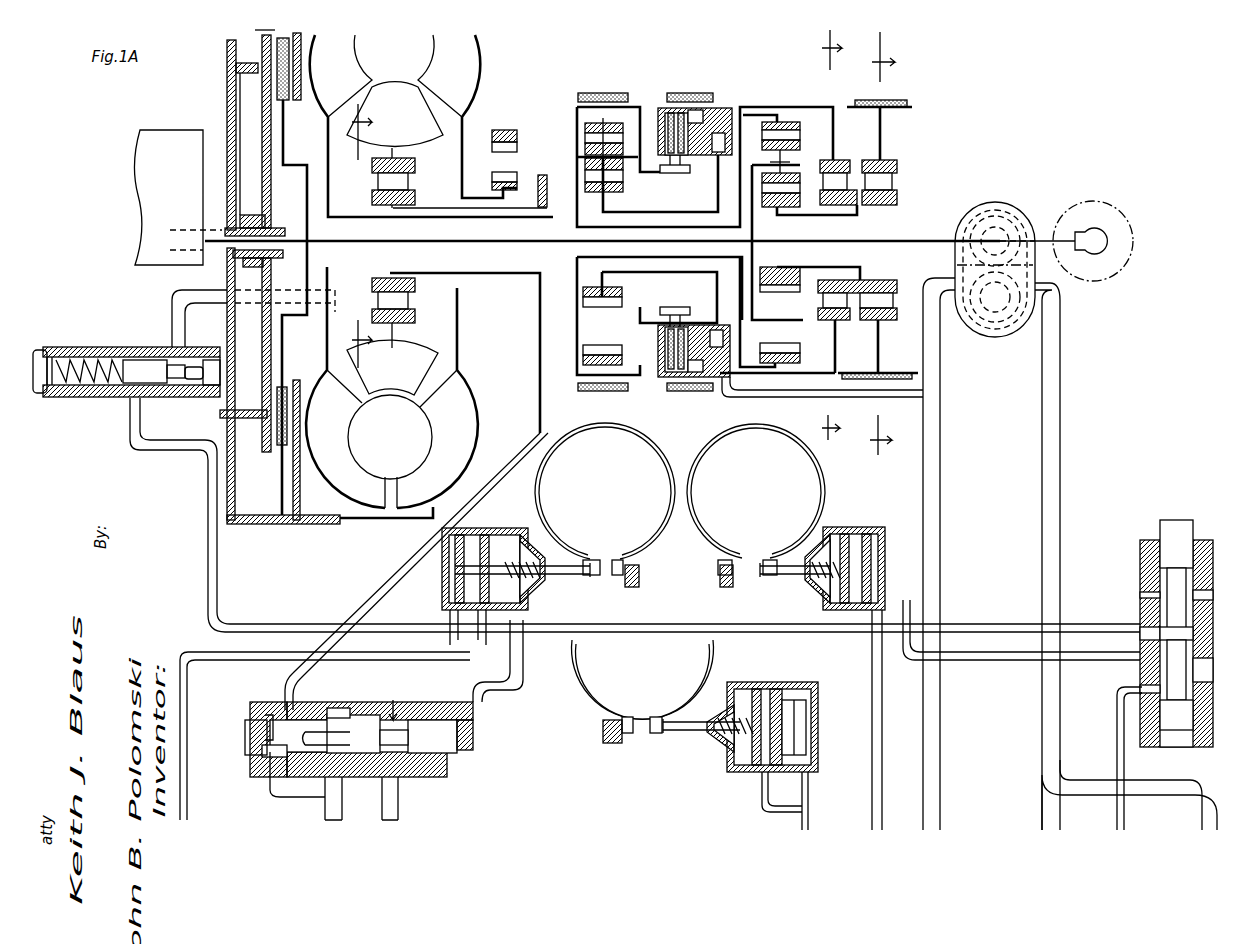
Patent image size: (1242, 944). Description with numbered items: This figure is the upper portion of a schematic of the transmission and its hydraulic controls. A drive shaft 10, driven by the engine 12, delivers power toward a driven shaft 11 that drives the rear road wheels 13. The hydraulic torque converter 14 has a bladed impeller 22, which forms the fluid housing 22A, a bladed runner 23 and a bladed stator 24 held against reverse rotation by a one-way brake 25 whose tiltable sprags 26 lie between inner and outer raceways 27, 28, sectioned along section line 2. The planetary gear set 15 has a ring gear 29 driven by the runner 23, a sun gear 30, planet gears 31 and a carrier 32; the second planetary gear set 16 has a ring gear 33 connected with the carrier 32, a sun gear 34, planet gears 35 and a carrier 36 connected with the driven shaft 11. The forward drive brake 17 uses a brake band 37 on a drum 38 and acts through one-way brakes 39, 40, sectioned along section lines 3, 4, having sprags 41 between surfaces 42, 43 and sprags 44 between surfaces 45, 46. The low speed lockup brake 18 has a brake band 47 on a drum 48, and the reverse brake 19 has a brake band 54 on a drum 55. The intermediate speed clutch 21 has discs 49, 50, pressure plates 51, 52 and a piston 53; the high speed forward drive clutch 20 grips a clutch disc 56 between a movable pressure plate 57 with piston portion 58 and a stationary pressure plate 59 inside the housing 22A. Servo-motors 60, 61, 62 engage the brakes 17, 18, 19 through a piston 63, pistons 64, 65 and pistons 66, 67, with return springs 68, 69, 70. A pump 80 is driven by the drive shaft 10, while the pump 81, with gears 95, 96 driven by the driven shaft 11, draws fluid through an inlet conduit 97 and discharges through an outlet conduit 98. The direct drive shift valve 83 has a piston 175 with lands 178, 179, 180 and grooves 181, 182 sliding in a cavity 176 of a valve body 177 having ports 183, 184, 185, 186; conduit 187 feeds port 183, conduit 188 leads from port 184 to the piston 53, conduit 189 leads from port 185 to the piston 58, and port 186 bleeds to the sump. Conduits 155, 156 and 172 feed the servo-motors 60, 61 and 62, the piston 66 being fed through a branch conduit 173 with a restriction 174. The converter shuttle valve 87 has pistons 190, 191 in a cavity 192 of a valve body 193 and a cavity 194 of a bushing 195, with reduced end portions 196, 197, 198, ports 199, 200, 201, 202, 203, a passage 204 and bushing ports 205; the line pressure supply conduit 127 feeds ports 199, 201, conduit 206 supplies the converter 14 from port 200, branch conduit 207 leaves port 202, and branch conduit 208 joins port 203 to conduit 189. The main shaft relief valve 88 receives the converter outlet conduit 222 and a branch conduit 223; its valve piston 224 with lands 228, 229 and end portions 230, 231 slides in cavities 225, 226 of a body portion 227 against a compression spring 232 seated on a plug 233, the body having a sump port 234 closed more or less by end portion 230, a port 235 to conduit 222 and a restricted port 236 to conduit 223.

The section line 2 is at (371, 236).
The section line 3 is at (882, 252).
The section line 4 is at (832, 237).
The drive shaft 10 is at (215, 228).
The driven shaft 11 is at (940, 241).
The engine 12 is at (165, 140).
The rear road wheels 13 is at (1112, 212).
The hydraulic torque converter 14 is at (488, 48).
The planetary gear set 15 is at (570, 130).
The second planetary gear set 16 is at (787, 122).
The forward drive brake 17 is at (912, 106).
The low speed lockup brake 18 is at (699, 93).
The reverse brake 19 is at (605, 505).
The high speed forward drive clutch 20 is at (285, 105).
The intermediate speed clutch 21 is at (658, 108).
The bladed impeller 22 is at (392, 387).
The torque converter fluid housing 22A is at (383, 518).
The bladed runner 23 is at (329, 429).
The bladed stator 24 is at (392, 367).
The one-way brake 25 is at (415, 178).
The tiltable sprags 26 is at (378, 182).
The inner cylindrical raceway 27 is at (415, 299).
The outer cylindrical raceway 28 is at (408, 305).
The ring gear 29 is at (593, 350).
The sun gear 30 is at (620, 308).
The planet gears 31 is at (580, 163).
The planet gear carrier 32 is at (640, 335).
The ring gear 33 is at (780, 348).
The sun gear 34 is at (768, 267).
The planet gears 35 is at (800, 146).
The planet gear carrier 36 is at (753, 231).
The brake band 37 is at (875, 100).
The drum 38 is at (912, 107).
The one-way brake 39 is at (905, 171).
The second one-way brake 40 is at (842, 206).
The sprags 41 is at (893, 298).
The inner cylindrical surface 42 is at (878, 282).
The outer cylindrical surface 43 is at (878, 308).
The sprags 44 is at (823, 300).
The inner cylindrical surface 45 is at (835, 280).
The outer cylindrical surface 46 is at (835, 308).
The brake band 47 is at (703, 397).
The brake drum 48 is at (665, 377).
The discs 49 is at (687, 158).
The discs 50 is at (658, 143).
The pressure plate 51 is at (658, 325).
The pressure plate 52 is at (680, 315).
The fluid pressure actuated piston 53 is at (708, 330).
The brake band 54 is at (610, 423).
The drum 55 is at (635, 387).
The clutch disc 56 is at (280, 446).
The axially movable pressure plate 57 is at (262, 435).
The piston portion 58 is at (262, 337).
The axially stationary pressure plate 59 is at (296, 380).
The servo-motor 60 is at (817, 601).
The servo-motor 61 is at (716, 780).
The servo-motor 62 is at (430, 592).
The piston 63 is at (868, 534).
The piston 64 is at (757, 689).
The piston 65 is at (798, 700).
The piston 66 is at (460, 535).
The piston 67 is at (487, 535).
The return spring 68 is at (830, 537).
The return spring 69 is at (715, 738).
The return spring 70 is at (538, 585).
The pump 80 is at (506, 120).
The pump 81 is at (1019, 200).
The direct drive shift valve 83 is at (1181, 504).
The converter shuttle valve 87 is at (522, 765).
The main shaft relief valve 88 is at (89, 307).
The gear 95 is at (995, 205).
The gear 96 is at (985, 325).
The inlet conduit 97 is at (1060, 398).
The outlet conduit 98 is at (940, 410).
The line pressure supply conduit 127 is at (325, 815).
The conduit 155 is at (882, 818).
The conduit 156 is at (808, 812).
The conduit 172 is at (187, 813).
The parallel branch conduit 173 is at (486, 645).
The restriction 174 is at (485, 652).
The piston 175 is at (1195, 528).
The cylindrical cavity 176 is at (1165, 533).
The valve body 177 is at (1148, 542).
The land 178 is at (1175, 720).
The land 179 is at (1165, 638).
The land 180 is at (1168, 555).
The groove 181 is at (1170, 678).
The groove 182 is at (1162, 575).
The port 183 is at (1142, 693).
The port 184 is at (1140, 657).
The port 185 is at (1140, 625).
The bleed port 186 is at (1145, 595).
The conduit 187 is at (1117, 810).
The conduit 188 is at (1013, 662).
The conduit 189 is at (210, 551).
The piston 190 is at (475, 725).
The piston 191 is at (398, 695).
The cylindrical cavity 192 is at (432, 720).
The valve body 193 is at (445, 770).
The cylindrical cavity 194 is at (365, 720).
The bushing 195 is at (320, 710).
The reduced diameter end portion 196 is at (408, 738).
The reduced diameter end portion 197 is at (475, 745).
The reduced diameter end portion 198 is at (350, 738).
The restricted port 199 is at (265, 768).
The port 200 is at (270, 712).
The port 201 is at (342, 775).
The port 202 is at (395, 775).
The port 203 is at (482, 702).
The passage 204 is at (245, 725).
The ports 205 is at (338, 710).
The conduit 206 is at (350, 606).
The branch conduit 207 is at (398, 815).
The branch conduit 208 is at (523, 680).
The outlet conduit 222 is at (185, 290).
The branch conduit 223 is at (165, 450).
The valve piston 224 is at (150, 360).
The cylindrical cavity 225 is at (178, 383).
The cylindrical cavity 226 is at (85, 397).
The body portion 227 is at (48, 397).
The land 228 is at (145, 371).
The land 229 is at (118, 347).
The reduced diameter end portion 230 is at (193, 365).
The reduced diameter end portion 231 is at (103, 397).
The compression spring 232 is at (66, 357).
The plug 233 is at (47, 347).
The port 234 is at (213, 375).
The port 235 is at (185, 347).
The restricted port 236 is at (138, 400).